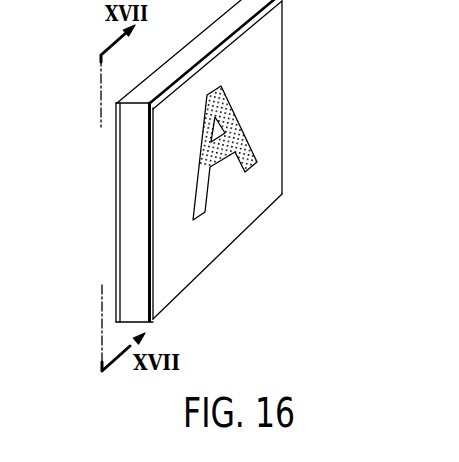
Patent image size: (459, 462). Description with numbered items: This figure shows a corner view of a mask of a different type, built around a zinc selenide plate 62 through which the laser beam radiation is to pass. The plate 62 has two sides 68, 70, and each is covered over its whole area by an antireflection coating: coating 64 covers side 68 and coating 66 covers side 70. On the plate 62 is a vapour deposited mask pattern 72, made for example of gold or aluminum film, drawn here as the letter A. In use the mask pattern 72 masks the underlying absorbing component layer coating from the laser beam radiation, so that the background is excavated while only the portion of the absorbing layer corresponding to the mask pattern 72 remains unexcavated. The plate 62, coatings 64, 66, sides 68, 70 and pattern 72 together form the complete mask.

The zinc selenide plate 62 is at (152, 174).
The antireflection coating 64 is at (118, 305).
The antireflection coating 66 is at (241, 171).
The side of plate 68 is at (124, 243).
The side of plate 70 is at (139, 273).
The mask pattern 72 is at (249, 149).